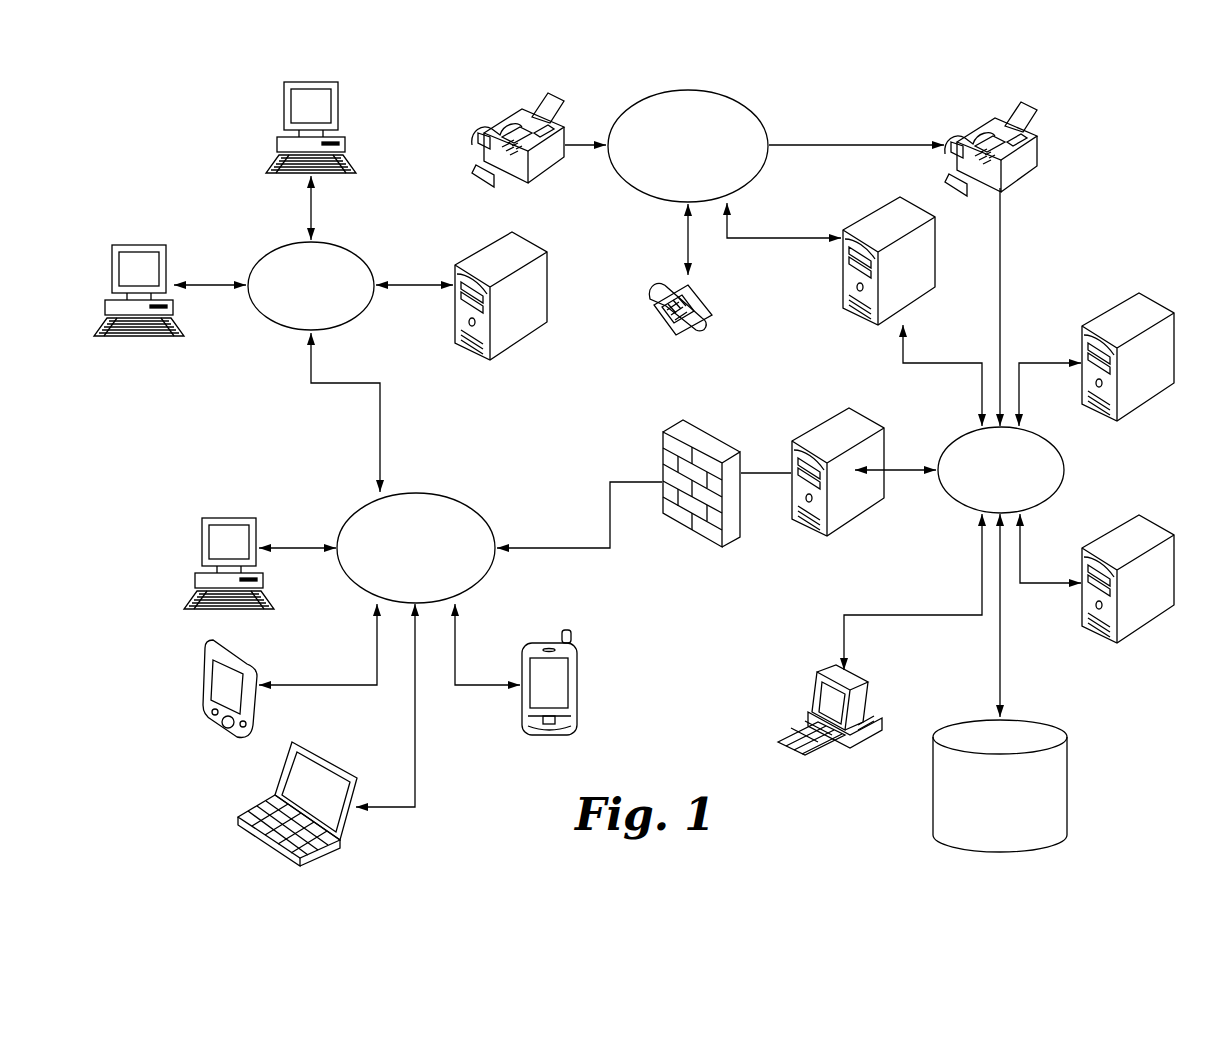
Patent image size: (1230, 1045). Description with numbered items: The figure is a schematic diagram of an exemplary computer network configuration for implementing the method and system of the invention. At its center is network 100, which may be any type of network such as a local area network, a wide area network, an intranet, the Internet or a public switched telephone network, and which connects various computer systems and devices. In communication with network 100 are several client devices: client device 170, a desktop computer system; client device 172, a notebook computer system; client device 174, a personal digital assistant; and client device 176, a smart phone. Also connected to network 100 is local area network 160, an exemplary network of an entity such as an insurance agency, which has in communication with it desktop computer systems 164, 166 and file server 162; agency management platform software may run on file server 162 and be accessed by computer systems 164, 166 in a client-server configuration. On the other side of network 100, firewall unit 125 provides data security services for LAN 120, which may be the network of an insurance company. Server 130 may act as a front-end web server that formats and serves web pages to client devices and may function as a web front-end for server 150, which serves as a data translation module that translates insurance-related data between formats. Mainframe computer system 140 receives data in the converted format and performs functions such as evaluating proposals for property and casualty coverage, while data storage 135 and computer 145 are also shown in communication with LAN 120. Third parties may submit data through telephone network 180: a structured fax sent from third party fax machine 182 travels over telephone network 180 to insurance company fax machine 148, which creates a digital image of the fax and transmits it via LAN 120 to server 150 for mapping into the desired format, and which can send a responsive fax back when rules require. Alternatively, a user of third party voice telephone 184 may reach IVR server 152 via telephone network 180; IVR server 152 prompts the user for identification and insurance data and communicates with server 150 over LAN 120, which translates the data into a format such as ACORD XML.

The network 100 is at (467, 517).
The LAN 120 is at (953, 505).
The firewall unit 125 is at (723, 438).
The server 130 is at (828, 532).
The data storage 135 is at (1047, 722).
The mainframe computer system 140 is at (1143, 627).
The computer 145 is at (800, 680).
The insurance company fax machine 148 is at (1040, 152).
The server 150 is at (1117, 307).
The IVR server 152 is at (841, 285).
The local area network 160 is at (262, 327).
The file server 162 is at (548, 290).
The desktop computer system 164 is at (140, 245).
The desktop computer system 166 is at (339, 108).
The client device 170 is at (200, 553).
The client device 172 is at (238, 817).
The client device 174 is at (207, 683).
The client device 176 is at (578, 687).
The telephone network 180 is at (742, 102).
The third party fax machine 182 is at (558, 100).
The third party voice telephone 184 is at (673, 338).